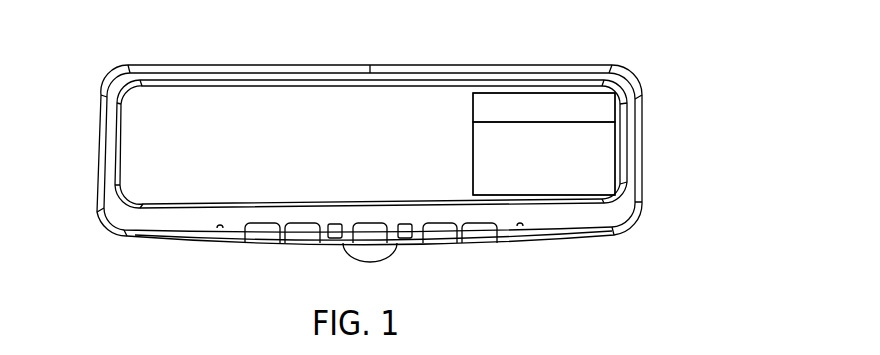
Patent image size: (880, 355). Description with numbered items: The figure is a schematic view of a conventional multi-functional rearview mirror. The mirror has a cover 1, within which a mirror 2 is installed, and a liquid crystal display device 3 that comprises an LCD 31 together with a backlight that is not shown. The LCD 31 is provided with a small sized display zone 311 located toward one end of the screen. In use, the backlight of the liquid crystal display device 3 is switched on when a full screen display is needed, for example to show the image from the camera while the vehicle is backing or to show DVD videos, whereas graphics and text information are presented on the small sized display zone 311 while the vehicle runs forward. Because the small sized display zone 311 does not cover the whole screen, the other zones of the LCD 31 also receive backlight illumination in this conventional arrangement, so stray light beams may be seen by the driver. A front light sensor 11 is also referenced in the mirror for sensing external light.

The cover 1 is at (150, 232).
The front light sensor 11 is at (407, 230).
The mirror 2 is at (335, 98).
The liquid crystal display device 3 is at (614, 123).
The LCD 31 is at (598, 148).
The small sized display zone 311 is at (598, 105).